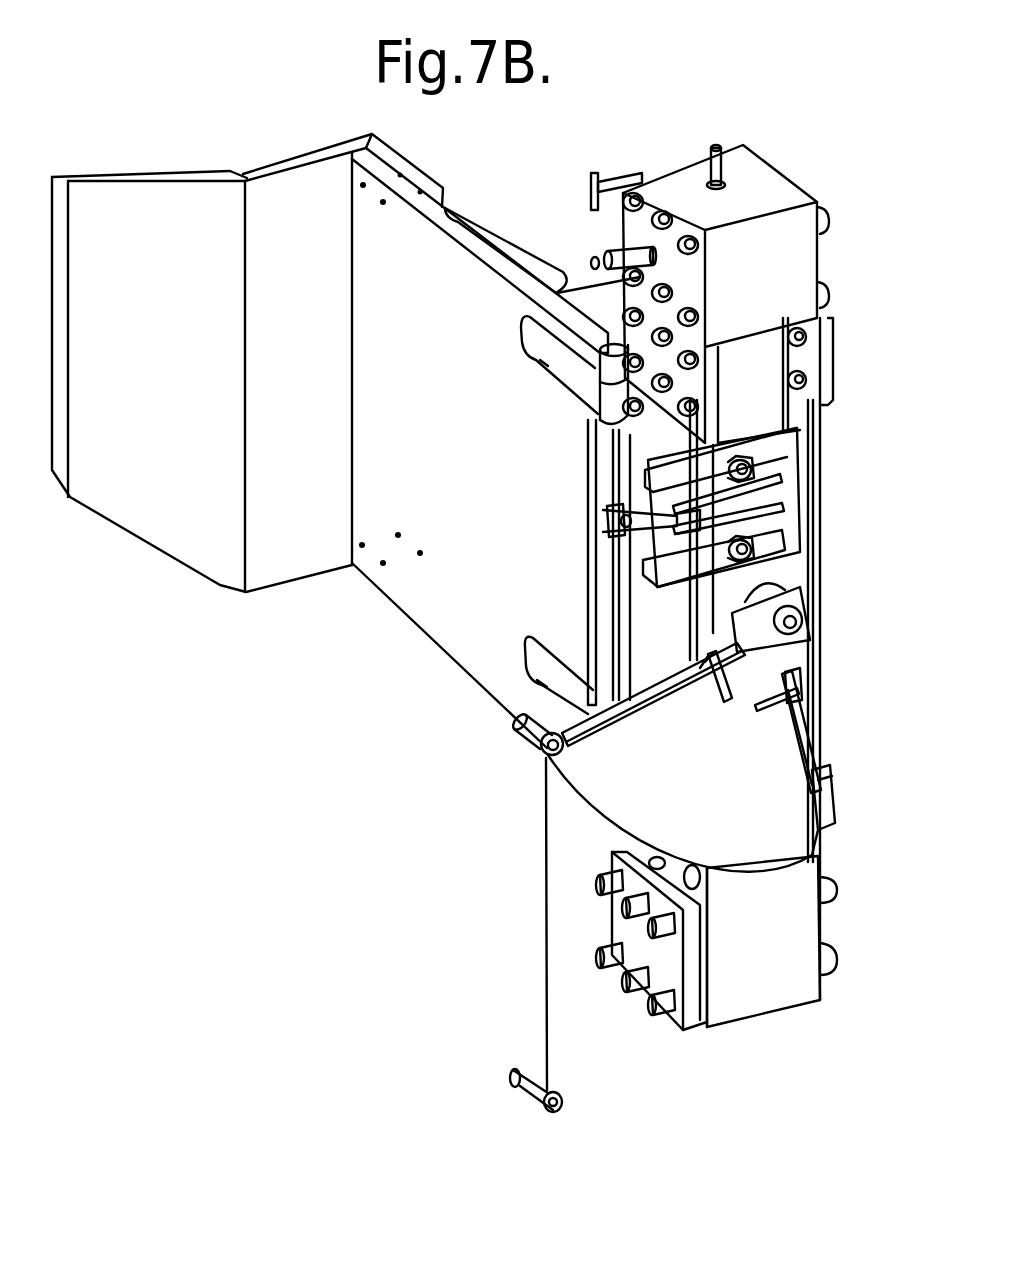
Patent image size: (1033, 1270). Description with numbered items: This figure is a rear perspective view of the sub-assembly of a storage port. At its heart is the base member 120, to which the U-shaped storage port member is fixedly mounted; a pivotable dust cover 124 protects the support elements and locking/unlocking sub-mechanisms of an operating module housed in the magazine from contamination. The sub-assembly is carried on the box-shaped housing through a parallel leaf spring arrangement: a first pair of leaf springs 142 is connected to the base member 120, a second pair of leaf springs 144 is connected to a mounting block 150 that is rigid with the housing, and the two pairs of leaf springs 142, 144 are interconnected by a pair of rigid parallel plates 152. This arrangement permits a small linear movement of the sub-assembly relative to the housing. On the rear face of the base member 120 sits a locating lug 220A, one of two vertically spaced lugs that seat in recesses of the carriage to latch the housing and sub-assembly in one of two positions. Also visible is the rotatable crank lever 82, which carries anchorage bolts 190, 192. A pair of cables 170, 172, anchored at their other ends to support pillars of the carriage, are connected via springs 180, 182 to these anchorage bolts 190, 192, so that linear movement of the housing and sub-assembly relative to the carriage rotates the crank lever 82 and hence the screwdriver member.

The pivotable dust cover 124 is at (143, 200).
The first pair of leaf springs 142 is at (816, 258).
The base member 120 is at (762, 360).
The rigid parallel plates 152 is at (653, 433).
The locating lug 220A is at (603, 524).
The anchorage bolt 190 is at (810, 643).
The anchorage bolt 192 is at (802, 688).
The spring 182 is at (810, 742).
The cable 172 is at (835, 797).
The crank lever 82 is at (803, 835).
The spring 180 is at (653, 700).
The cable 170 is at (545, 886).
The second pair of leaf springs 144 is at (820, 943).
The mounting block 150 is at (768, 988).